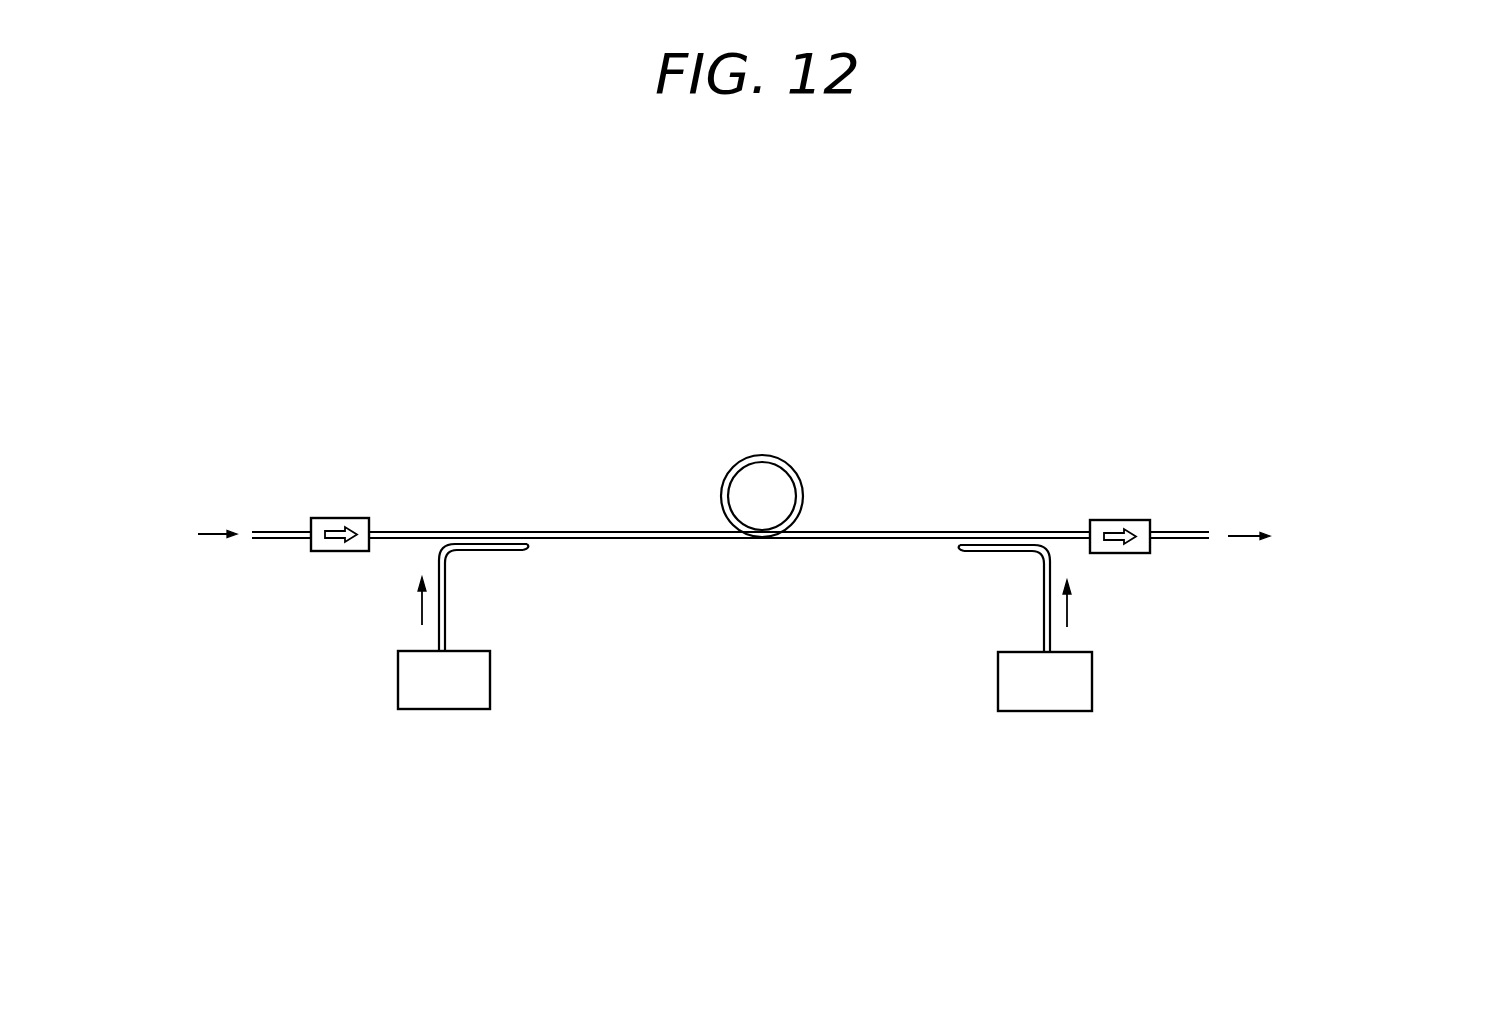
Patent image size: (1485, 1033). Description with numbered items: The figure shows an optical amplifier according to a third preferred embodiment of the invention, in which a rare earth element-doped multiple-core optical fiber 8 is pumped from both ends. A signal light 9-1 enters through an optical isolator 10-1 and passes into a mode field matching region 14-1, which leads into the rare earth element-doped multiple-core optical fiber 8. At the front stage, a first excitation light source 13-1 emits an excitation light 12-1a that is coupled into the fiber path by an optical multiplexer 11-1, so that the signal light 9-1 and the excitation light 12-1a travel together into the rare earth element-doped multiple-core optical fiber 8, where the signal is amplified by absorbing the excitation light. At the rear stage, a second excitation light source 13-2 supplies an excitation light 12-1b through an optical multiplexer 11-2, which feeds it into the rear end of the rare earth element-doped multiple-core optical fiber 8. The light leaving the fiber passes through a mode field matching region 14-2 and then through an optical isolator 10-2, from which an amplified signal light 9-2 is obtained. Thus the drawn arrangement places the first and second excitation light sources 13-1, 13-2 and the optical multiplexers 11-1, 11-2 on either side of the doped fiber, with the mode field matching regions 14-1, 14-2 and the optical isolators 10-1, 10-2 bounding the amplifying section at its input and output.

The rare earth element-doped multiple-core optical fiber 8 is at (735, 460).
The signal light 9-1 is at (207, 528).
The amplified signal light 9-2 is at (1245, 542).
The optical isolator 10-1 is at (324, 518).
The optical isolator 10-2 is at (1118, 520).
The optical multiplexer 11-1 is at (508, 557).
The optical multiplexer 11-2 is at (987, 556).
The excitation light 12-1a is at (417, 603).
The excitation light 12-1b is at (1070, 608).
The first excitation light source 13-1 is at (440, 702).
The second excitation light source 13-2 is at (1038, 703).
The mode field matching region 14-1 is at (545, 527).
The mode field matching region 14-2 is at (937, 530).